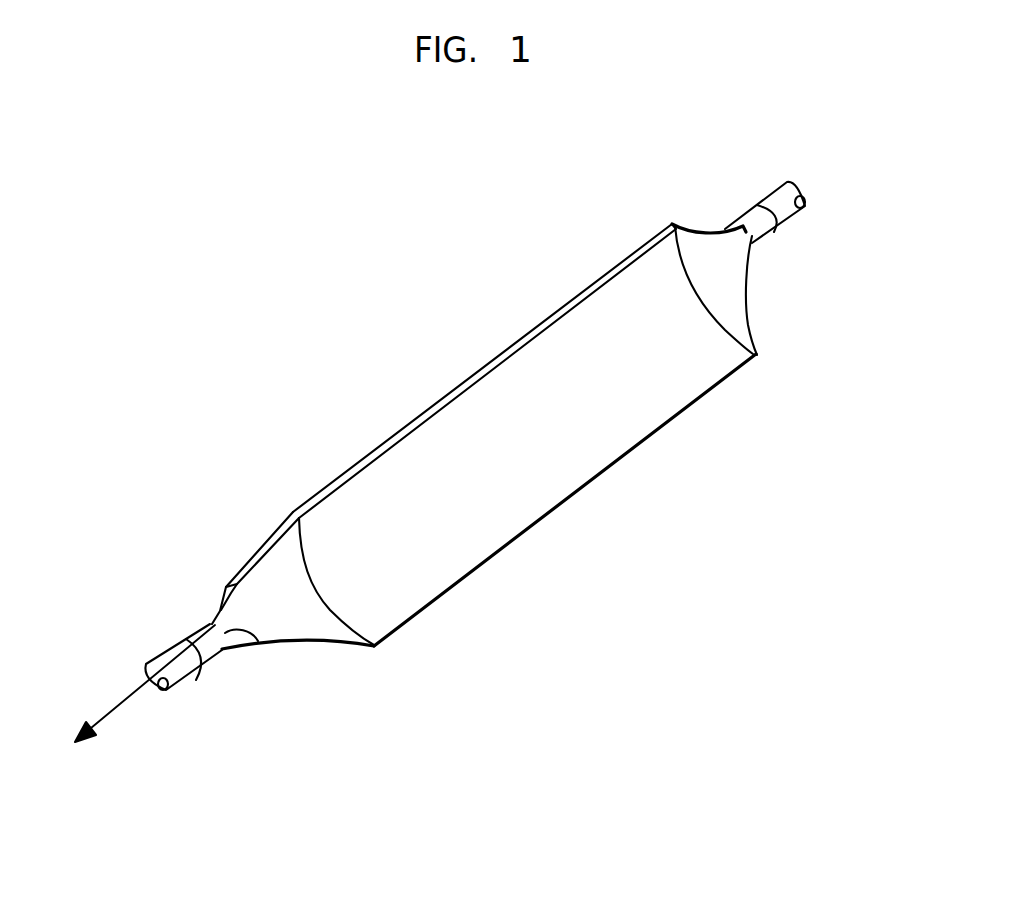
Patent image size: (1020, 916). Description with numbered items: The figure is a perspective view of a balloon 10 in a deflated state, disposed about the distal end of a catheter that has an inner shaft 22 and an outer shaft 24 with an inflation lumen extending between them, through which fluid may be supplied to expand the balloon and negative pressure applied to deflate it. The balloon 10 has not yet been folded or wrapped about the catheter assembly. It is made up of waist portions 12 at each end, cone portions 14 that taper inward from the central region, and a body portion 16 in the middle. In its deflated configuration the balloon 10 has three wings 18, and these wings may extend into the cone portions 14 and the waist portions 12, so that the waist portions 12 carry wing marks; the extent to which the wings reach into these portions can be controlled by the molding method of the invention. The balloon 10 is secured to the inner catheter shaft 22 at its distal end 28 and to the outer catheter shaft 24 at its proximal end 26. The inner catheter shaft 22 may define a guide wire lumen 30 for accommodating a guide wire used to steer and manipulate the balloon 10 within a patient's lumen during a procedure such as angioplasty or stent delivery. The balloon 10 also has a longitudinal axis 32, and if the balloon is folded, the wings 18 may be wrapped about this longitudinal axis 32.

The balloon 10 is at (463, 492).
The waist portions 12 is at (762, 235).
The cone portions 14 is at (283, 563).
The body portion 16 is at (503, 448).
The wings 18 is at (375, 442).
The inner shaft 22 is at (217, 652).
The outer shaft 24 is at (775, 217).
The proximal end 26 is at (694, 225).
The distal end 28 is at (188, 630).
The guide wire lumen 30 is at (182, 695).
The longitudinal axis 32 is at (125, 703).